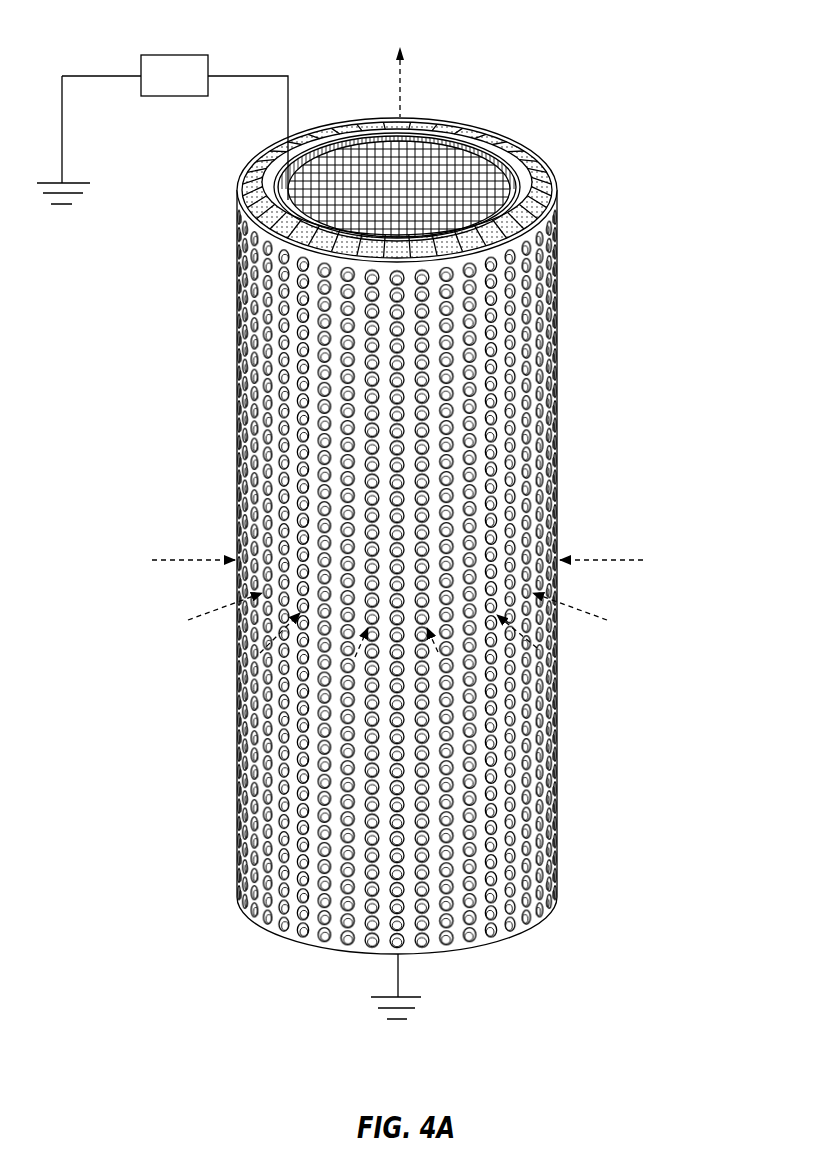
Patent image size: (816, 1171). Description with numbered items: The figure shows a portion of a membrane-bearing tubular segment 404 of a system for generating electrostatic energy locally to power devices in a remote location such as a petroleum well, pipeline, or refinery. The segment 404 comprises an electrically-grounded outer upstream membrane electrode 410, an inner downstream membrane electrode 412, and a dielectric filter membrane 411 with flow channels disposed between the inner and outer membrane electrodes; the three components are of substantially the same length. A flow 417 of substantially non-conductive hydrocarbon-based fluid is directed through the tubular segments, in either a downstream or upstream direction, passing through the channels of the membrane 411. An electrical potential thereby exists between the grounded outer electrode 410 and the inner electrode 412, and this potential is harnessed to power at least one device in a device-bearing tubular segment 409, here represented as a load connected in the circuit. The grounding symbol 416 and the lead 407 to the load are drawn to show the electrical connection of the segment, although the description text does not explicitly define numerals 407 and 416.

The membrane-bearing tubular segment 404 is at (585, 344).
The electrical lead 407 is at (112, 75).
The device-bearing tubular segment 409 is at (178, 97).
The electrically-grounded outer upstream membrane electrode 410 is at (558, 441).
The dielectric filter membrane 411 is at (528, 240).
The inner downstream membrane electrode 412 is at (438, 182).
The ground connection 416 is at (430, 1012).
The flow of substantially non-conductive hydrocarbon-based fluid 417 is at (404, 94).